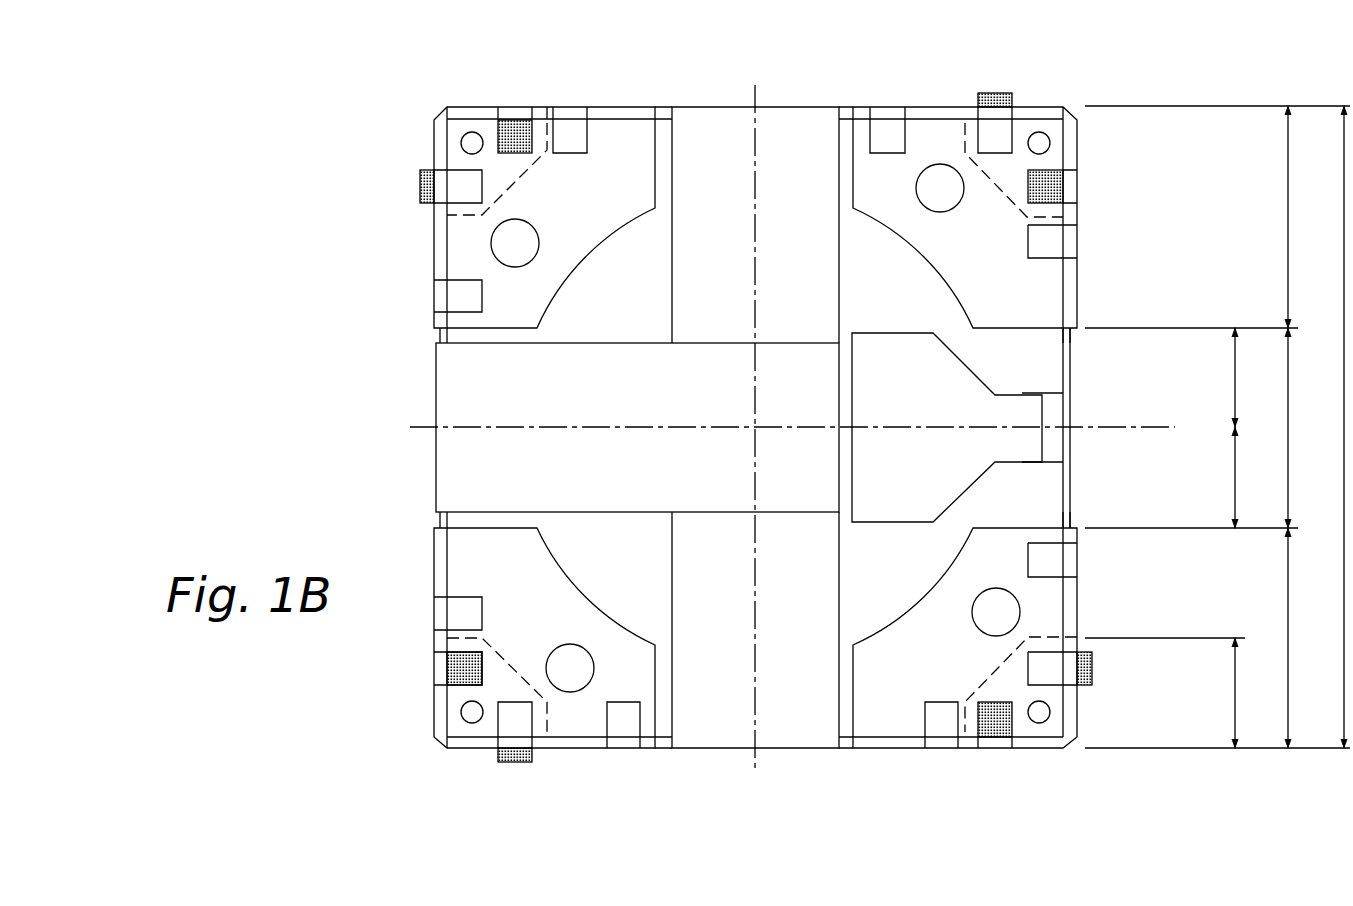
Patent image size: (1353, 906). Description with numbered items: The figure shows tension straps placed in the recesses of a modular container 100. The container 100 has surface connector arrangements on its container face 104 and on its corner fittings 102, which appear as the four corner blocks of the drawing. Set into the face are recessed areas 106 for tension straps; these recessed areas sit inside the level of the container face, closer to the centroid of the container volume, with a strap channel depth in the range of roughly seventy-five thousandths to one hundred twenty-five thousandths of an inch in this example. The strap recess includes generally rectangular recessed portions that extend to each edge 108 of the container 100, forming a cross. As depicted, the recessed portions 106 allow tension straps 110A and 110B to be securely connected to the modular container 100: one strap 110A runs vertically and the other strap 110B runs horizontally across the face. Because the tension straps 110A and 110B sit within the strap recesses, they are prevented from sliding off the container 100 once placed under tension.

The modular container 100 is at (312, 226).
The corner fitting 102 is at (459, 123).
The container face 104 is at (620, 130).
The recessed area 106 is at (663, 130).
The edge 108 is at (848, 112).
The tension strap 110A is at (732, 130).
The tension strap 110B is at (460, 400).